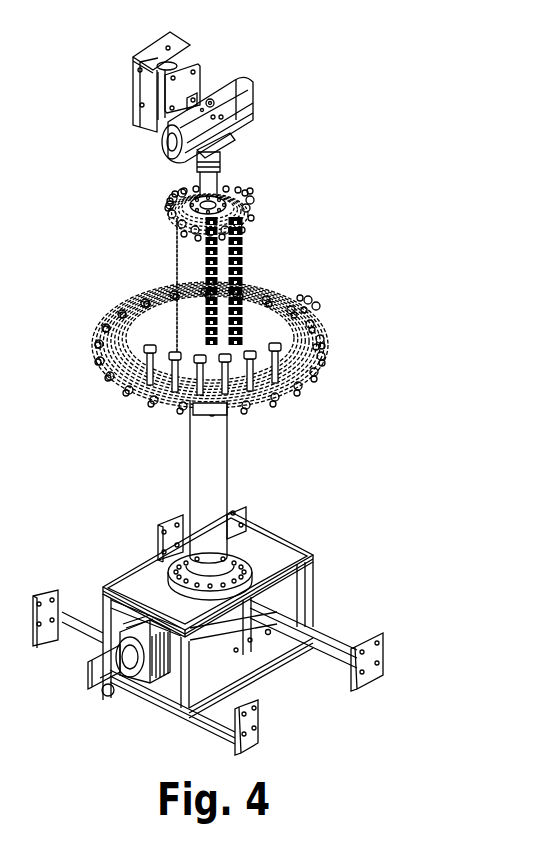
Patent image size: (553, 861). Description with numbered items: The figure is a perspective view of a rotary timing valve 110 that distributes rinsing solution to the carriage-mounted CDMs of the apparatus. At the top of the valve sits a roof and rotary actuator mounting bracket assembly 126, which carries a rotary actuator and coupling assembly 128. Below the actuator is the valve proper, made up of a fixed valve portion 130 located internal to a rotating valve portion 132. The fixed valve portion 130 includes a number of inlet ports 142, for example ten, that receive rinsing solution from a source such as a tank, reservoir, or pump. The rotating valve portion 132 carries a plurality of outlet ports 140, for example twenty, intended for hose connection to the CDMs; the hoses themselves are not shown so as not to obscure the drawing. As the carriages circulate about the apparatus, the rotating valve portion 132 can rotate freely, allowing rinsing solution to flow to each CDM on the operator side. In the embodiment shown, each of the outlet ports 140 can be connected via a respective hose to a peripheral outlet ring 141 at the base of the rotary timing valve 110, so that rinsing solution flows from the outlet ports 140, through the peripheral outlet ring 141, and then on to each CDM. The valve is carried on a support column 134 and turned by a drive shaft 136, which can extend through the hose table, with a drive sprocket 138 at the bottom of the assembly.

The rotary timing valve 110 is at (449, 286).
The roof and rotary actuator mounting bracket assembly 126 is at (268, 62).
The rotary actuator and coupling assembly 128 is at (270, 128).
The fixed valve portion 130 is at (188, 250).
The rotating valve portion 132 is at (150, 283).
The support column 134 is at (213, 485).
The drive shaft 136 is at (245, 458).
The drive sprocket 138 is at (140, 558).
The outlet ports 140 is at (245, 262).
The peripheral outlet ring 141 is at (322, 294).
The inlet ports 142 is at (250, 208).